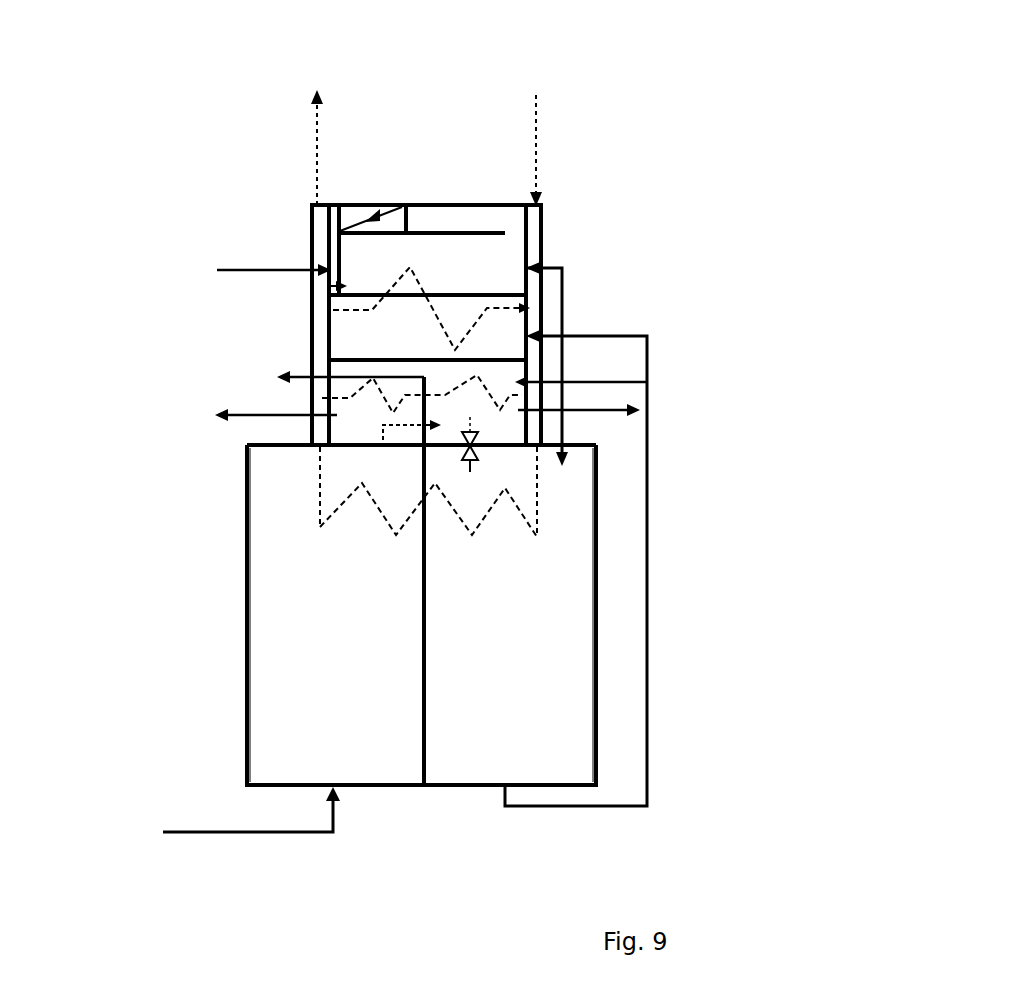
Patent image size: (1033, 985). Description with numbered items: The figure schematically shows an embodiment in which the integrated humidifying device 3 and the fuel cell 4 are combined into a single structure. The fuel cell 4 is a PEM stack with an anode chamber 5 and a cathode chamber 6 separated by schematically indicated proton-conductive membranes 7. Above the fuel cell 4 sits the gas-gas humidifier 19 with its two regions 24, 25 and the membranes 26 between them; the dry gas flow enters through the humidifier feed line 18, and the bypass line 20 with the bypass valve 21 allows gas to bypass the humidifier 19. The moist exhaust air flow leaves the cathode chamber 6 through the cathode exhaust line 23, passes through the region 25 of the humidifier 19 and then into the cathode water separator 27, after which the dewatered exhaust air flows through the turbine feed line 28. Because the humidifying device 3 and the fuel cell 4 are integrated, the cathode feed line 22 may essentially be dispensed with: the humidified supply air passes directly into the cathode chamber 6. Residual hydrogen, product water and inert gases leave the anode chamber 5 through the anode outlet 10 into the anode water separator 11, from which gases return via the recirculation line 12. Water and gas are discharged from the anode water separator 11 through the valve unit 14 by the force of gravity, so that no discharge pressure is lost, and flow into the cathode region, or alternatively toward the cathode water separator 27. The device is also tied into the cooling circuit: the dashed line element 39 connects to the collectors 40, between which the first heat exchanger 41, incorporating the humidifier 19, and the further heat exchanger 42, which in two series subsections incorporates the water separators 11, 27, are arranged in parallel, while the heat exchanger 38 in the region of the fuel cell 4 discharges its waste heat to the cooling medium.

The humidifying device 3 is at (450, 172).
The fuel cell 4 is at (423, 792).
The anode chamber 5 is at (278, 650).
The cathode chamber 6 is at (547, 698).
The proton-conductive membranes 7 is at (417, 712).
The anode outlet 10 is at (320, 495).
The anode water separator 11 is at (515, 432).
The recirculation line 12 is at (645, 408).
The valve unit 14 is at (480, 465).
The humidifier feed line 18 is at (313, 310).
The gas-gas humidifier 19 is at (329, 287).
The bypass line 20 is at (440, 203).
The bypass valve 21 is at (363, 202).
The cathode feed line 22 is at (565, 303).
The cathode exhaust line 23 is at (647, 334).
The region of the humidifier 24 is at (493, 267).
The region of the humidifier 25 is at (347, 332).
The membranes 26 is at (333, 310).
The cathode water separator 27 is at (357, 430).
The turbine feed line 28 is at (322, 398).
The heat exchanger 38 is at (473, 518).
The line element 39 is at (536, 130).
The collectors 40 is at (535, 237).
The first heat exchanger 41 is at (393, 287).
The heat exchanger 42 is at (450, 393).